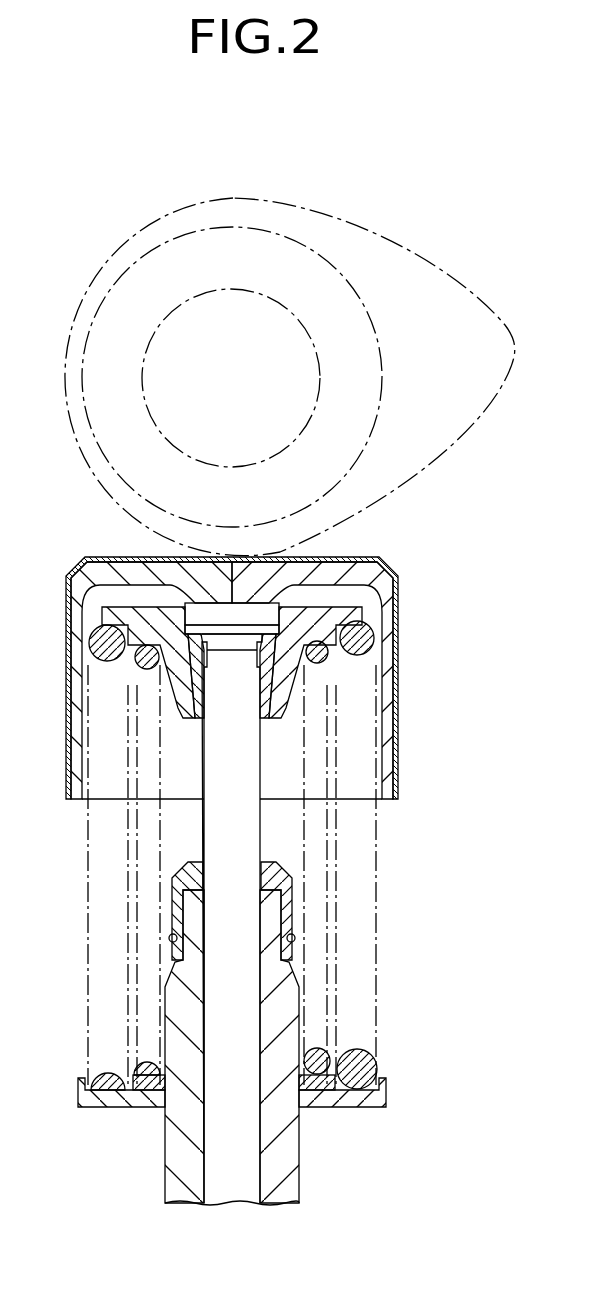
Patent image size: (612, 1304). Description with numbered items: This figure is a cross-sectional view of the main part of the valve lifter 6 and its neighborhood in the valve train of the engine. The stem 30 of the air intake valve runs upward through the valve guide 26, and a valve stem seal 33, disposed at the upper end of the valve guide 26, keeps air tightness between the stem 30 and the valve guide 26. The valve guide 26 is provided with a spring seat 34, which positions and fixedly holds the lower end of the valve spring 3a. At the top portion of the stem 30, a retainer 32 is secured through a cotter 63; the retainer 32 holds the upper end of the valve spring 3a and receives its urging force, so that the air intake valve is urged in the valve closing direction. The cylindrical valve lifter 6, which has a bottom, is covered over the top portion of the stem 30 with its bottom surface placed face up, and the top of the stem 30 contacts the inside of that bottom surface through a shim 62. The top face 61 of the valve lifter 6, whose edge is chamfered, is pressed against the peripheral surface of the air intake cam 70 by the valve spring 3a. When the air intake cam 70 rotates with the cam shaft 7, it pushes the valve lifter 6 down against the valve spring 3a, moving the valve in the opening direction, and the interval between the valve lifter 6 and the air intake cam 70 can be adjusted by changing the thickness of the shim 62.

The cam shaft 7 is at (217, 287).
The air intake cam 70 is at (437, 282).
The top face 61 is at (356, 556).
The valve lifter 6 is at (396, 598).
The shim 62 is at (268, 616).
The cotter 63 is at (270, 670).
The retainer 32 is at (277, 702).
The valve stem seal 33 is at (283, 875).
The stem 30 is at (243, 963).
The valve spring 3a is at (373, 1062).
The spring seat 34 is at (385, 1100).
The valve guide 26 is at (277, 1179).